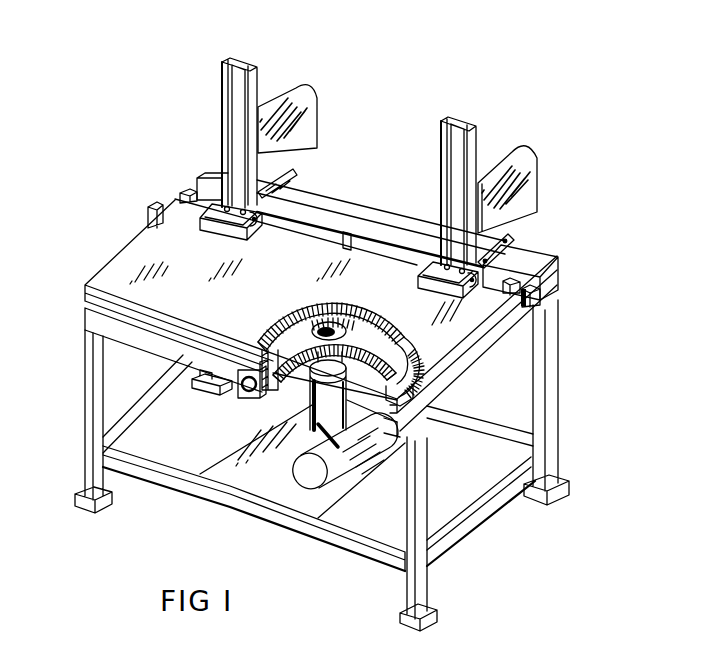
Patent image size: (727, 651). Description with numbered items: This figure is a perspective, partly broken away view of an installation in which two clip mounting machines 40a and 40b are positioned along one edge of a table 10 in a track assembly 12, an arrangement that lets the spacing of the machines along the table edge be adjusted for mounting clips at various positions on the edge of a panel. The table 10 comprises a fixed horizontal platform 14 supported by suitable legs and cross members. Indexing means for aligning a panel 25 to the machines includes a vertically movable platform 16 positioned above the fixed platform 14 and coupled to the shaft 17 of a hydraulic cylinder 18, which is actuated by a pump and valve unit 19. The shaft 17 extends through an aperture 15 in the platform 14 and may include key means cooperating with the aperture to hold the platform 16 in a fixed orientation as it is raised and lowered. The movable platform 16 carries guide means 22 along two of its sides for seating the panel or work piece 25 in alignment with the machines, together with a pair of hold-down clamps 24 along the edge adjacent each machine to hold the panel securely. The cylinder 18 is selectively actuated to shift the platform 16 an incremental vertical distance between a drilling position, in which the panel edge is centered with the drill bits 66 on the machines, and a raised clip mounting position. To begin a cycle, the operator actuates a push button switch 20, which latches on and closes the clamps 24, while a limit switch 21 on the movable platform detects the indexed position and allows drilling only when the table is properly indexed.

The table 10 is at (578, 366).
The track assembly 12 is at (363, 213).
The fixed horizontal platform 14 is at (93, 323).
The aperture 15 is at (353, 318).
The vertically movable platform 16 is at (247, 348).
The shaft 17 is at (313, 320).
The hydraulic cylinder 18 is at (312, 411).
The pump and valve unit 19 is at (362, 450).
The push button switch 20 is at (238, 393).
The limit switch 21 is at (545, 291).
The guide means 22 is at (157, 203).
The hold-down clamps 24 is at (213, 232).
The panel 25 is at (184, 309).
The clip mounting machine 40a is at (318, 78).
The clip mounting machine 40b is at (539, 141).
The drill bits 66 is at (258, 224).